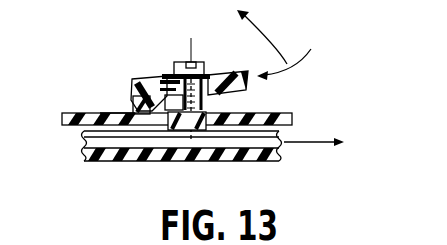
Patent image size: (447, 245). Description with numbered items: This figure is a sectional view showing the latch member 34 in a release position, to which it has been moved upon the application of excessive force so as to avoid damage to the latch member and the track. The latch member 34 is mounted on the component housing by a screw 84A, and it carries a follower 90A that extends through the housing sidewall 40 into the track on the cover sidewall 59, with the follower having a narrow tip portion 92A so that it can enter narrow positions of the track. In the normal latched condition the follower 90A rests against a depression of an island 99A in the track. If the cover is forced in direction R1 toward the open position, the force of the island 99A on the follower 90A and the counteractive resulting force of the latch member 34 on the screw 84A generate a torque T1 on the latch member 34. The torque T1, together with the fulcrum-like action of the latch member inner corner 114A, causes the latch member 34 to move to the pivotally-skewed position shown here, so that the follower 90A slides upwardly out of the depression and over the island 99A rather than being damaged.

The latch member inner corner 114A is at (117, 113).
The follower 90A is at (133, 114).
The screw 84A is at (198, 62).
The narrow tip portion 92A is at (160, 120).
The island 99A is at (125, 108).
The latch member 34 is at (296, 54).
The housing sidewall 40 is at (289, 113).
The cover sidewall 59 is at (277, 158).
The torque T1 is at (285, 26).
The direction R1 is at (303, 141).